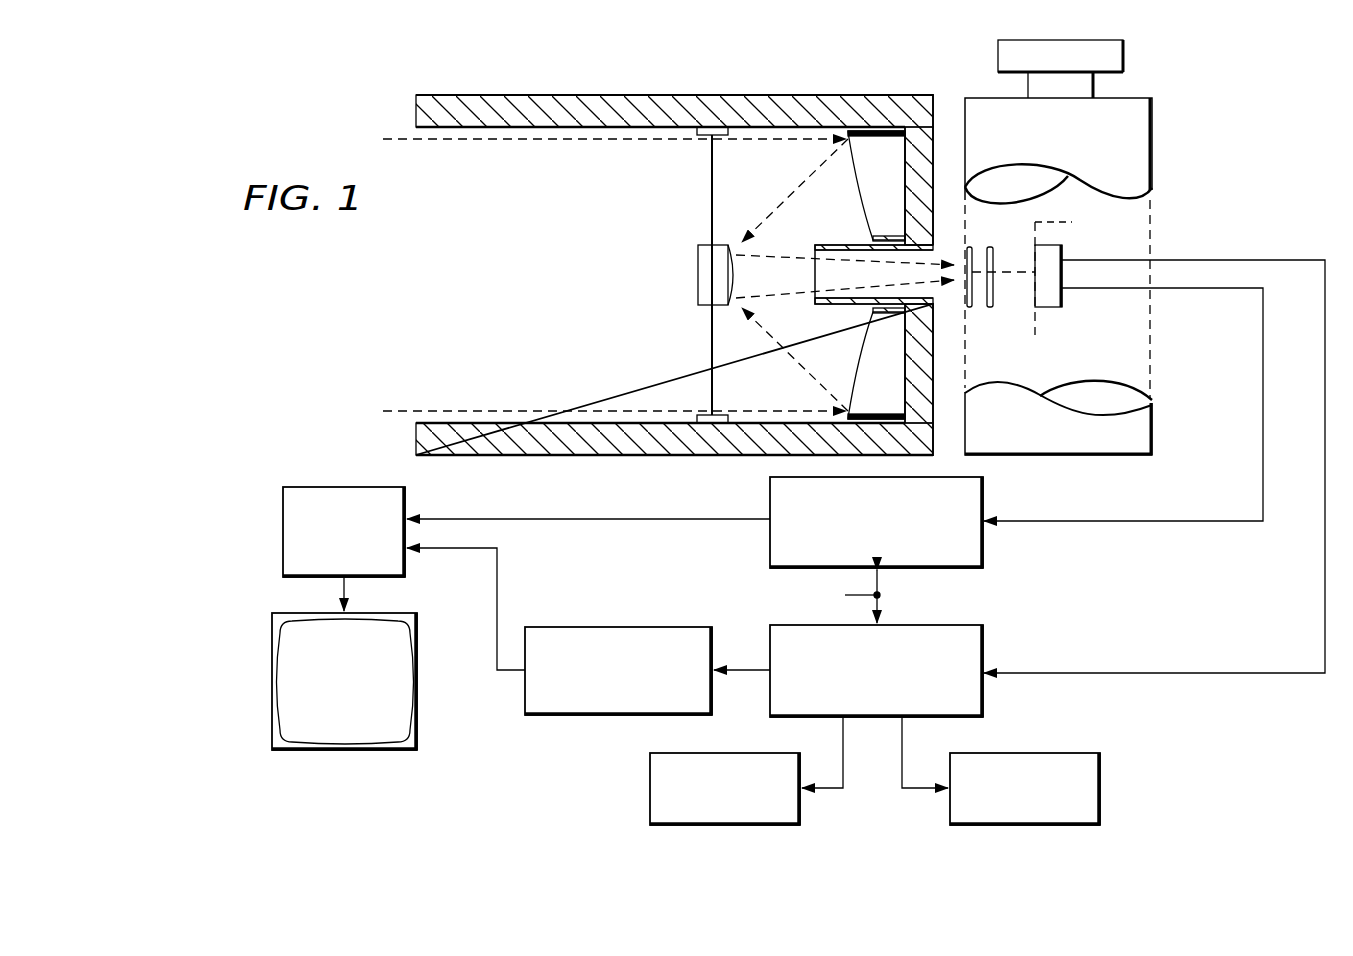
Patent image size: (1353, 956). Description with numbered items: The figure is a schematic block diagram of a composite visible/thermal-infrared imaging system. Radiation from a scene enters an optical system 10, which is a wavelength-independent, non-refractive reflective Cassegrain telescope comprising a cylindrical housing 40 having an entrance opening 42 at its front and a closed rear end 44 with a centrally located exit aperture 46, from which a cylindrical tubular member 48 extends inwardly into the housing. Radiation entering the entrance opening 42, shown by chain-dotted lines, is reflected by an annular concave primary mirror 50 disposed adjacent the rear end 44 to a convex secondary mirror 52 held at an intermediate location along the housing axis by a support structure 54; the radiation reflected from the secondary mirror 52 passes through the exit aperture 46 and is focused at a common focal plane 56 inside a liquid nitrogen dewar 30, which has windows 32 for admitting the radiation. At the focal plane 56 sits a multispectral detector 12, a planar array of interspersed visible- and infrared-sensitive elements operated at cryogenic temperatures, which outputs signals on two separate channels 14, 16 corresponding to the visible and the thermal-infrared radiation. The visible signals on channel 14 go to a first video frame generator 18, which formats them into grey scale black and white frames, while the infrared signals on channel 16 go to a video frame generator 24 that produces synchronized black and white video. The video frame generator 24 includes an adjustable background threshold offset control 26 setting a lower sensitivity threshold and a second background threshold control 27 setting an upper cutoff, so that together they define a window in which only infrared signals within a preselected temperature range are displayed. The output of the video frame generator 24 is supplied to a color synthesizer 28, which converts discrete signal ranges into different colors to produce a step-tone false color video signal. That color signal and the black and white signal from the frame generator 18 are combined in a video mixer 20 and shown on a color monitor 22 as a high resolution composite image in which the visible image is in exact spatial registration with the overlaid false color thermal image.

The optical system 10 is at (702, 84).
The multispectral detector 12 is at (1050, 307).
The first channel 14 is at (1263, 448).
The second channel 16 is at (1325, 580).
The first video frame generator 18 is at (770, 493).
The video mixer 20 is at (283, 530).
The color monitor 22 is at (417, 628).
The video frame generator 24 is at (968, 625).
The adjustable background threshold offset control 26 is at (650, 788).
The second background threshold control 27 is at (1103, 780).
The color synthesizer 28 is at (680, 627).
The liquid nitrogen dewar 30 is at (1145, 120).
The windows 32 is at (969, 308).
The cylindrical housing 40 is at (628, 456).
The entrance opening 42 is at (456, 344).
The closed rear end 44 is at (937, 118).
The exit aperture 46 is at (935, 302).
The cylindrical tubular member 48 is at (856, 308).
The annular concave primary mirror 50 is at (868, 210).
The convex secondary mirror 52 is at (737, 275).
The support structure 54 is at (710, 352).
The common focal plane 56 is at (1070, 275).